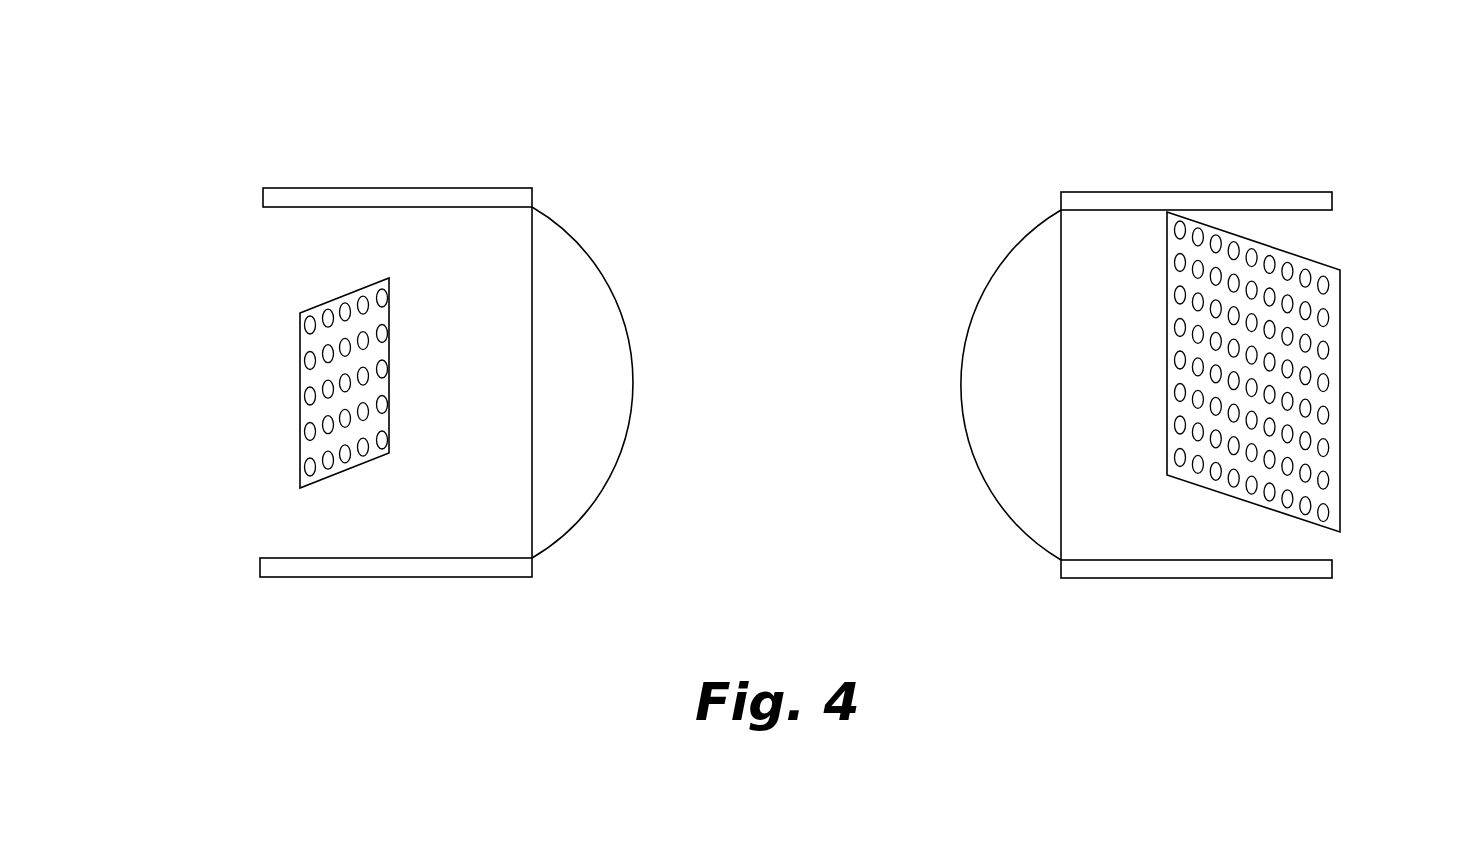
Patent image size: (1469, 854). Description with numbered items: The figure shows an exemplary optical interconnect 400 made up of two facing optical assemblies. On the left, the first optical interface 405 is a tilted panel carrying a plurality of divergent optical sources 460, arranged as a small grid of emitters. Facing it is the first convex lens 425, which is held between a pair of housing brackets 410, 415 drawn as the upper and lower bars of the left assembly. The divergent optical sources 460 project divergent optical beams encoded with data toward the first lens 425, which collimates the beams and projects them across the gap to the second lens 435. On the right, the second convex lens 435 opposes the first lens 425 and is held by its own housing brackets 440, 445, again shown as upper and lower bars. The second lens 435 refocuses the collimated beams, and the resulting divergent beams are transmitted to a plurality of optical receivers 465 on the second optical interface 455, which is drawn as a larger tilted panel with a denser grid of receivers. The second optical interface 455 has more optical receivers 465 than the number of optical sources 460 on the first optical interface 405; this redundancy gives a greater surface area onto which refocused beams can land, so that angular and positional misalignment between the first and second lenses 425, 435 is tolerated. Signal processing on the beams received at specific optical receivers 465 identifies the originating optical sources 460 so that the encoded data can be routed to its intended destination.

The optical interconnect 400 is at (192, 117).
The first optical interface 405 is at (333, 383).
The housing bracket 410 is at (352, 200).
The housing bracket 415 is at (377, 567).
The first convex lens 425 is at (552, 265).
The second convex lens 435 is at (1047, 245).
The housing bracket 440 is at (1178, 202).
The housing bracket 445 is at (1207, 570).
The second optical interface 455 is at (1269, 372).
The divergent optical sources 460 is at (386, 300).
The optical receivers 465 is at (1176, 327).